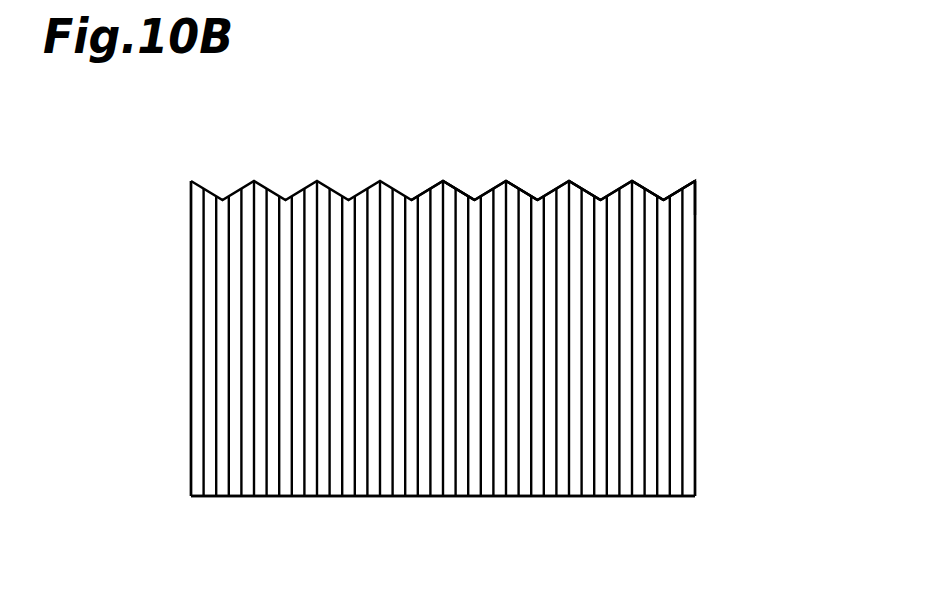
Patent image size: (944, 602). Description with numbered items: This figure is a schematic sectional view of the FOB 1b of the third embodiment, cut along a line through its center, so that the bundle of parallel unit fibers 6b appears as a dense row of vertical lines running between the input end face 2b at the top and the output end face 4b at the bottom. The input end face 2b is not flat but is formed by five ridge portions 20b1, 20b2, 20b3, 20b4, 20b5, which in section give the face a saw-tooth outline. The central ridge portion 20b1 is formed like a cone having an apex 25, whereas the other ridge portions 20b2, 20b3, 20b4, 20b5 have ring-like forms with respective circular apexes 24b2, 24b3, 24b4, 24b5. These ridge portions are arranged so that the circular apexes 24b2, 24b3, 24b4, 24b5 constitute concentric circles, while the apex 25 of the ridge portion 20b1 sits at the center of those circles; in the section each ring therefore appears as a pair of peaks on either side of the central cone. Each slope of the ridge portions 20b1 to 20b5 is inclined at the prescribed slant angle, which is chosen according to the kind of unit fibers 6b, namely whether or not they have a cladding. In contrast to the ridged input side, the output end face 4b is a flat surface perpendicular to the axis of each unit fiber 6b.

The FOB 1b is at (152, 300).
The input end face 2b is at (270, 192).
The output end face 4b is at (570, 498).
The unit fiber 6b is at (197, 483).
The apex 25 is at (443, 181).
The ridge portion 20b1 is at (463, 190).
The ridge portion 20b2 is at (528, 188).
The ridge portion 20b3 is at (596, 188).
The ridge portion 20b4 is at (656, 192).
The ridge portion 20b5 is at (690, 181).
The circular apex 24b2 is at (509, 186).
The circular apex 24b3 is at (571, 181).
The circular apex 24b4 is at (633, 186).
The circular apex 24b5 is at (696, 183).